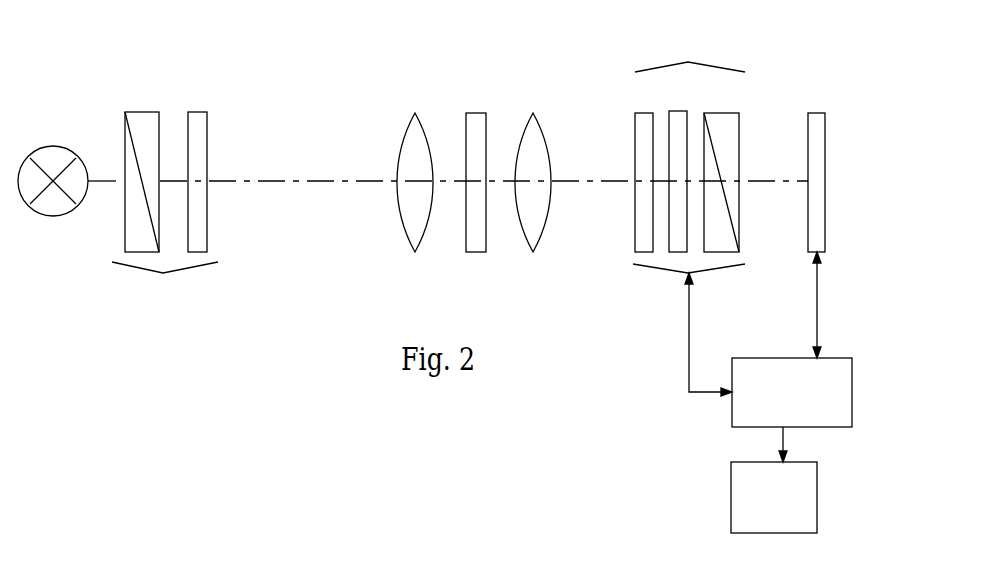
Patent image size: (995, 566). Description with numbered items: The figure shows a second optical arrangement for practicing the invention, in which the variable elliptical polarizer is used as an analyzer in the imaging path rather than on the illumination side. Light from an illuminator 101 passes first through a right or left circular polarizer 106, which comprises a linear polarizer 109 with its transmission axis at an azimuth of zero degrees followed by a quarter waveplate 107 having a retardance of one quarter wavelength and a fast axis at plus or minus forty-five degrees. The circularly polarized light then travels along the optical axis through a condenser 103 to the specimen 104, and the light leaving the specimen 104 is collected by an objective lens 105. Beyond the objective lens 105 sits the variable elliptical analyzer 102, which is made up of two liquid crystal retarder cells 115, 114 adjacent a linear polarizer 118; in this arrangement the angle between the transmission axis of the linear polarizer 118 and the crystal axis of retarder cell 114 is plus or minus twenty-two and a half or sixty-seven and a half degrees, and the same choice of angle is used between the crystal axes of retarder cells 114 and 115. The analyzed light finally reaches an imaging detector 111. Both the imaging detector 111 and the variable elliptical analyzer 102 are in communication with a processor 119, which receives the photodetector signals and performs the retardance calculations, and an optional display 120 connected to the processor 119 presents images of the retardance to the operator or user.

The illuminator 101 is at (53, 200).
The variable elliptical analyzer 102 is at (689, 151).
The condenser 103 is at (415, 203).
The specimen 104 is at (475, 203).
The objective lens 105 is at (533, 203).
The right or left circular polarizer 106 is at (165, 284).
The quarter waveplate 107 is at (197, 167).
The linear polarizer 109 is at (142, 167).
The imaging detector 111 is at (816, 166).
The liquid crystal retarder cell 114 is at (682, 166).
The liquid crystal retarder cell 115 is at (638, 166).
The linear polarizer 118 is at (721, 166).
The processor 119 is at (787, 339).
The display 120 is at (793, 480).